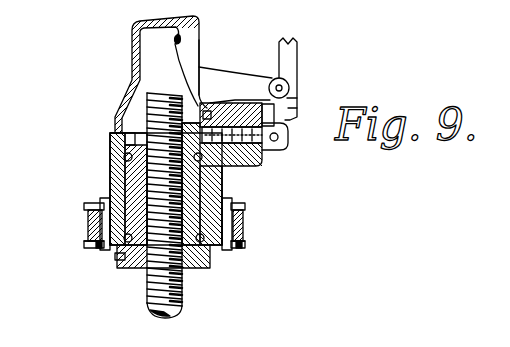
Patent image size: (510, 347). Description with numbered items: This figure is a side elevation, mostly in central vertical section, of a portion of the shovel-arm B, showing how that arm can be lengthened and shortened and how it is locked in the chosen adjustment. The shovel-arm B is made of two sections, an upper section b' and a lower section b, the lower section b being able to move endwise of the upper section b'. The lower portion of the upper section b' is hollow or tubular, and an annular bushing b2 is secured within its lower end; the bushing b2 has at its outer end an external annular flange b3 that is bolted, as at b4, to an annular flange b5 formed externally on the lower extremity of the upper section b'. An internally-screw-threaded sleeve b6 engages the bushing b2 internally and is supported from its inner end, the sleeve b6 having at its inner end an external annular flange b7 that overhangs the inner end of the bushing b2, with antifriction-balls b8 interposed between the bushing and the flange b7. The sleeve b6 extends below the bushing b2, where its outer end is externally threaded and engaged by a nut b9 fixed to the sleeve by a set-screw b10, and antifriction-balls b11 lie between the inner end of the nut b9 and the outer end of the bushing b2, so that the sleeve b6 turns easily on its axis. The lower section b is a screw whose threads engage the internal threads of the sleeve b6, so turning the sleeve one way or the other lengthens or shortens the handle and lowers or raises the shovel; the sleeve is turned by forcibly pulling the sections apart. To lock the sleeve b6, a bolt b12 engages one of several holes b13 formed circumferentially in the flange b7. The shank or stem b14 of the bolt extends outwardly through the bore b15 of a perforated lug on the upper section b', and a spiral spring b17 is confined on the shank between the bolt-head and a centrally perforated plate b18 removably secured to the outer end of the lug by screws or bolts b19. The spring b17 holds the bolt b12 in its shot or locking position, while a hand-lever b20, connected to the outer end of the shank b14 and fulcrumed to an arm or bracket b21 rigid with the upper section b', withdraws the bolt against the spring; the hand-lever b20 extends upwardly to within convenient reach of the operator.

The shovel-arm B is at (152, 128).
The upper section b' is at (146, 74).
The lower section b is at (178, 205).
The annular bushing b2 is at (112, 198).
The external annular flange b3 is at (94, 240).
The bolts b4 is at (90, 226).
The annular flange b5 is at (90, 208).
The internally-screw-threaded sleeve b6 is at (120, 184).
The external annular flange b7 is at (112, 150).
The antifriction-balls b8 is at (124, 160).
The nut b9 is at (126, 268).
The set-screw b10 is at (116, 258).
The antifriction-balls b11 is at (96, 250).
The bolt b12 is at (222, 106).
The holes b13 is at (125, 137).
The shank or stem b14 is at (282, 133).
The bore b15 is at (228, 104).
The spiral spring b17 is at (262, 112).
The plate b18 is at (262, 162).
The screws or bolts b19 is at (244, 106).
The hand-lever b20 is at (292, 58).
The arm or bracket b21 is at (211, 84).